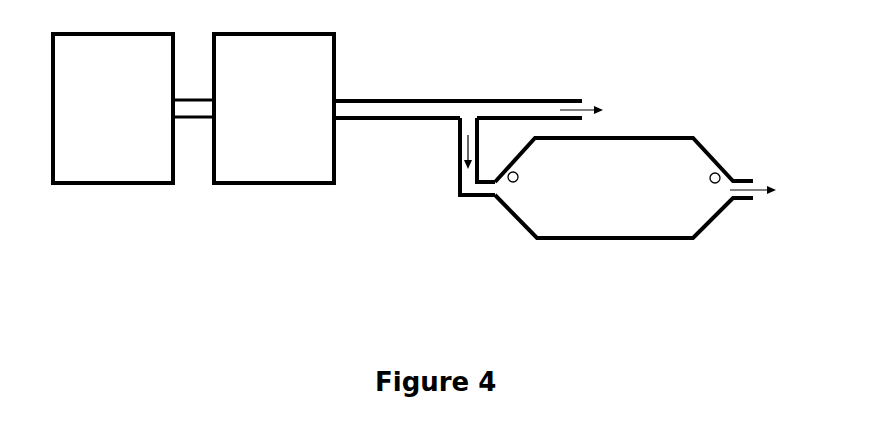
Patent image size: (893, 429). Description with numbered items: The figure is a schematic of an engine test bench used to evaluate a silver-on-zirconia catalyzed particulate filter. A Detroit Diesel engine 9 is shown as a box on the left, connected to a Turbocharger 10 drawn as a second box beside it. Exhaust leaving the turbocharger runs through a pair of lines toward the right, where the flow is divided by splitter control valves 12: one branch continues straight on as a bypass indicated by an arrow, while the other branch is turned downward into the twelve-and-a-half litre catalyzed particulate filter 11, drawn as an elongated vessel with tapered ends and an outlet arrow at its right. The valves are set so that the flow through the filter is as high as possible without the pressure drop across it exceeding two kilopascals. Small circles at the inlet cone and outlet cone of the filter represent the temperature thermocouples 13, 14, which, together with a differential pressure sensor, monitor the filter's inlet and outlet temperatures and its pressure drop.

The Detroit Diesel engine 9 is at (93, 58).
The Turbocharger 10 is at (288, 57).
The catalyzed particulate filter 11 is at (615, 155).
The splitter control valves 12 is at (465, 108).
The temperature thermocouple 13 is at (512, 171).
The temperature thermocouple 14 is at (720, 172).